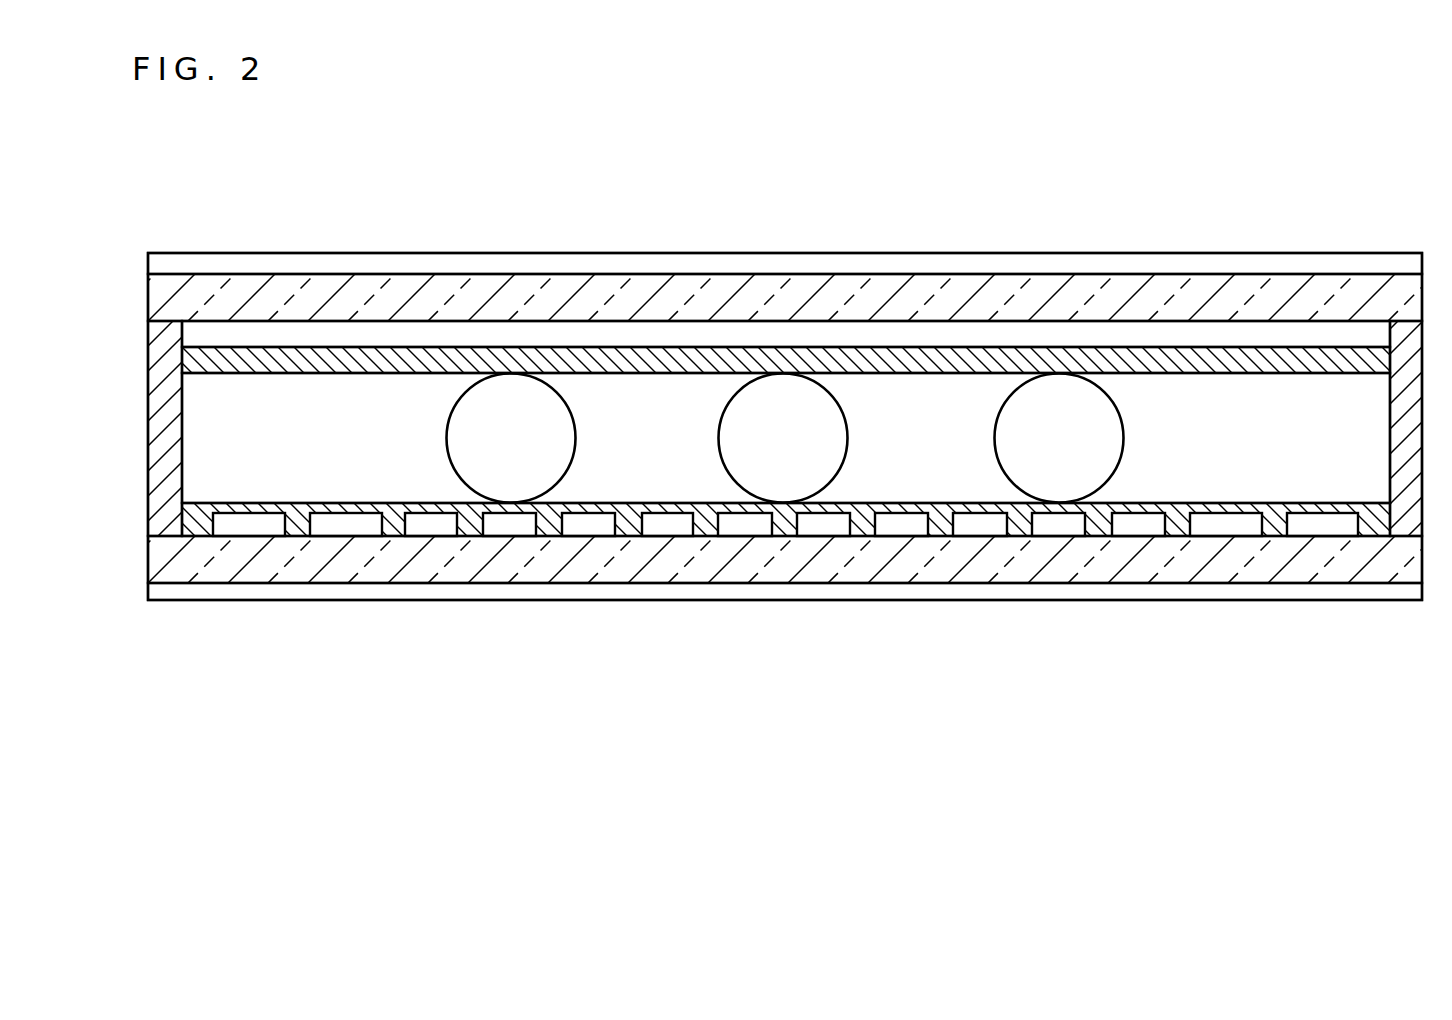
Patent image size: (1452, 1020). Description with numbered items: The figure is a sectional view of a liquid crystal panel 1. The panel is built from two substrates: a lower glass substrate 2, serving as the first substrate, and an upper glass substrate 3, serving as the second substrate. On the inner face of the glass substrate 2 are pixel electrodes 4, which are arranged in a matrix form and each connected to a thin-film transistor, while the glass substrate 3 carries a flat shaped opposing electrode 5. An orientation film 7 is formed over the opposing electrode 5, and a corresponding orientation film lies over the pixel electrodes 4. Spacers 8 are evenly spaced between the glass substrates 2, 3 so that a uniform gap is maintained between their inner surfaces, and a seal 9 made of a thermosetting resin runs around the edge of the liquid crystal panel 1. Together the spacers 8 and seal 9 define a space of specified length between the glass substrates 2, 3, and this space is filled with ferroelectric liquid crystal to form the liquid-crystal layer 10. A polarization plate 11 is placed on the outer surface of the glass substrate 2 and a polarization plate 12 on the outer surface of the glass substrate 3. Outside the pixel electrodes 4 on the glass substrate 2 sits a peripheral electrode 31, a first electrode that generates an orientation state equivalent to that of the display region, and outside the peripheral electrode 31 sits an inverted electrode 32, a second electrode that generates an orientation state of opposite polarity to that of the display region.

The liquid crystal panel 1 is at (1053, 191).
The glass substrate 2 is at (1381, 573).
The glass substrate 3 is at (1284, 284).
The pixel electrodes 4 is at (587, 527).
The opposing electrode 5 is at (1240, 334).
The orientation film 7 is at (1195, 358).
The spacers 8 is at (765, 478).
The seal 9 is at (182, 406).
The liquid-crystal layer 10 is at (1140, 418).
The polarization plate 11 is at (1330, 595).
The polarization plate 12 is at (1332, 262).
The peripheral electrode 31 is at (338, 528).
The inverted electrode 32 is at (250, 528).